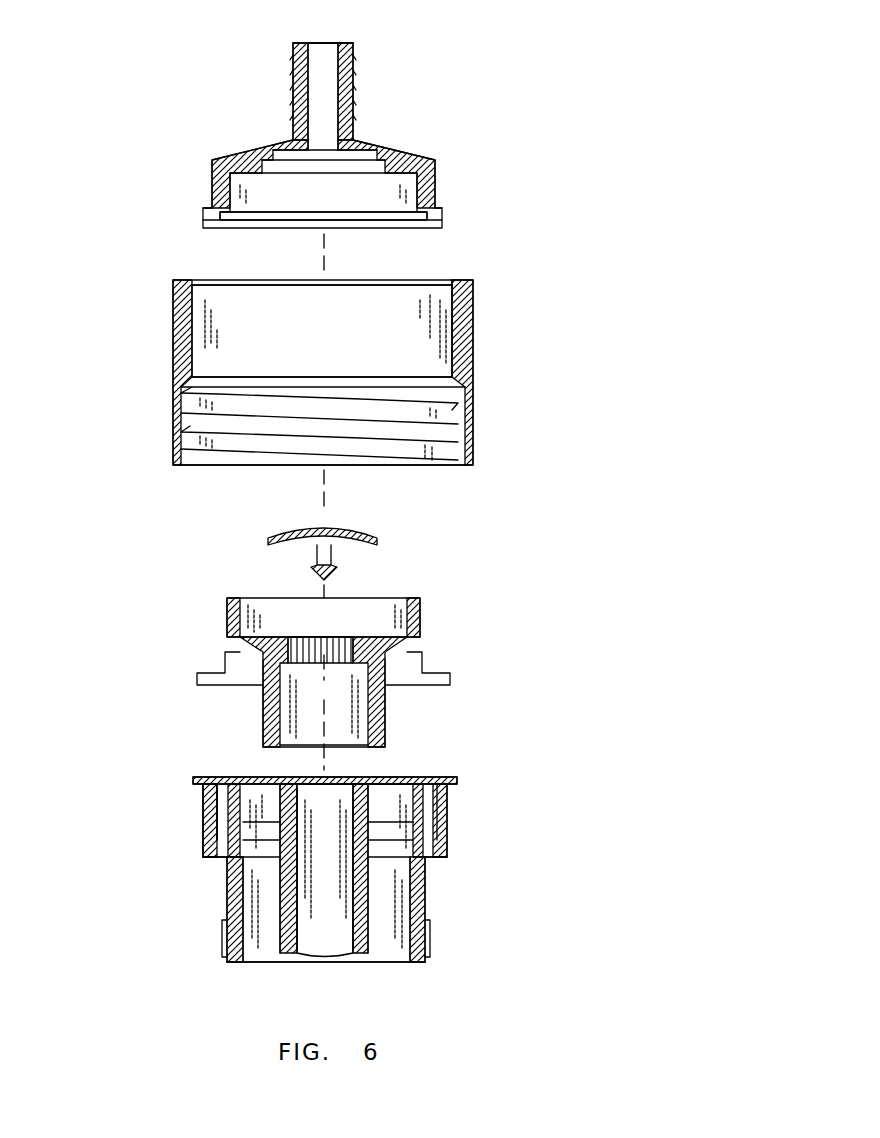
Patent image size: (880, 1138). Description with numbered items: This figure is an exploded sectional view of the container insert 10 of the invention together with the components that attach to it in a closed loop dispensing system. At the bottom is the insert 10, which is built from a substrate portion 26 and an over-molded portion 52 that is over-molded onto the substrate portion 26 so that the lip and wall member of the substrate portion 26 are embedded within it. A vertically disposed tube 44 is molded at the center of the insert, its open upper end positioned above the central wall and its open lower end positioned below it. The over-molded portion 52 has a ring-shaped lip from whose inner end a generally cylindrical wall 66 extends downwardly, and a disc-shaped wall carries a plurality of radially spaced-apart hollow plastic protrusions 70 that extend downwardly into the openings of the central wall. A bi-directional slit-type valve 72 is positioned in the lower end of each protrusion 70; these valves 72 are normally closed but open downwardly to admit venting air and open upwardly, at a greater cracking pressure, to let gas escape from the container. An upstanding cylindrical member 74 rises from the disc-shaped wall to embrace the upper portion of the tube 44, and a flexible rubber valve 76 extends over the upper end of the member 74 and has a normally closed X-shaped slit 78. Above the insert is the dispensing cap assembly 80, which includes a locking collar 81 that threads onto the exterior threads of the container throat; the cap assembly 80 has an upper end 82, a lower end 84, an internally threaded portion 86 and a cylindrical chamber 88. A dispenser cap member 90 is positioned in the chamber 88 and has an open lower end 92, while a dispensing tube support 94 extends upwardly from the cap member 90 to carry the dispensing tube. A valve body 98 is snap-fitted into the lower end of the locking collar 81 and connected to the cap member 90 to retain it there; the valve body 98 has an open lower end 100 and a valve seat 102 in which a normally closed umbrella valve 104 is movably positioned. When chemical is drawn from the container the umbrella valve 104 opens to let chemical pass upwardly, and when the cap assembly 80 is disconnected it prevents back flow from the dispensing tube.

The container insert 10 is at (490, 778).
The substrate portion 26 is at (182, 937).
The tube 44 is at (380, 897).
The over-molded portion 52 is at (185, 828).
The cylindrical wall 66 is at (207, 815).
The hollow plastic protrusions 70 is at (210, 855).
The bi-directional slit-type valve 72 is at (240, 882).
The upstanding cylindrical member 74 is at (385, 778).
The flexible rubber valve 76 is at (313, 778).
The X-shaped slit 78 is at (323, 782).
The dispensing cap assembly 80 is at (500, 297).
The locking collar 81 is at (467, 352).
The upper end 82 is at (443, 140).
The lower end 84 is at (408, 480).
The internally threaded portion 86 is at (472, 407).
The cylindrical chamber 88 is at (250, 338).
The dispenser cap member 90 is at (382, 106).
The open lower end 92 is at (290, 214).
The dispensing tube support 94 is at (352, 62).
The valve body 98 is at (203, 627).
The open lower end 100 is at (387, 727).
The valve seat 102 is at (353, 637).
The umbrella valve 104 is at (277, 527).